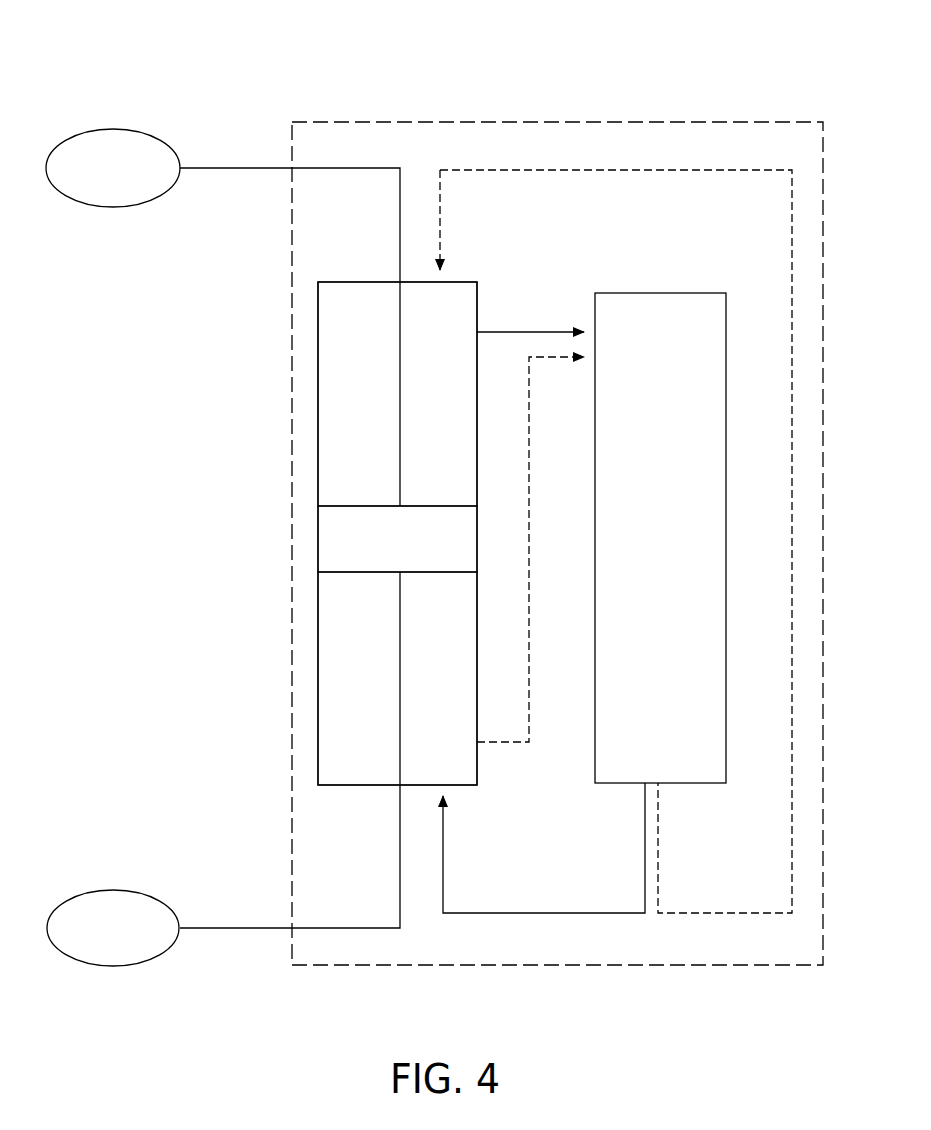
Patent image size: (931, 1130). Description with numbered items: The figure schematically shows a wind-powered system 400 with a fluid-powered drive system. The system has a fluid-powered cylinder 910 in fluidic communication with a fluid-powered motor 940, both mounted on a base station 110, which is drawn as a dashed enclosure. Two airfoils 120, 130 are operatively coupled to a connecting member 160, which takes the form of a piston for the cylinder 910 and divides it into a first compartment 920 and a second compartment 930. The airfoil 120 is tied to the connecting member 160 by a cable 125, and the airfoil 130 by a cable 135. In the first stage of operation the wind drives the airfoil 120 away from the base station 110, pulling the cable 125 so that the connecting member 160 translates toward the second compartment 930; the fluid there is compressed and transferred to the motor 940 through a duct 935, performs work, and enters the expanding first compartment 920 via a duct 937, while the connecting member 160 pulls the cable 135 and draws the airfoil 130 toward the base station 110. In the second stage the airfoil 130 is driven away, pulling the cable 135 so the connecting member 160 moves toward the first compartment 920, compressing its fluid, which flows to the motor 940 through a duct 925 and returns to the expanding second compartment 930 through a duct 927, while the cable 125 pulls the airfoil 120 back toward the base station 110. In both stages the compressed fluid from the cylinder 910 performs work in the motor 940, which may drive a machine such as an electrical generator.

The wind-powered system 400 is at (186, 68).
The base station 110 is at (500, 122).
The airfoil 120 is at (110, 207).
The airfoil 130 is at (110, 890).
The cable 125 is at (340, 168).
The cable 135 is at (343, 928).
The duct 927 is at (657, 170).
The fluid-powered cylinder 910 is at (312, 656).
The second compartment 930 is at (346, 358).
The connecting member 160 is at (344, 535).
The first compartment 920 is at (345, 715).
The fluid-powered motor 940 is at (648, 293).
The duct 935 is at (518, 330).
The duct 925 is at (500, 742).
The duct 937 is at (530, 913).